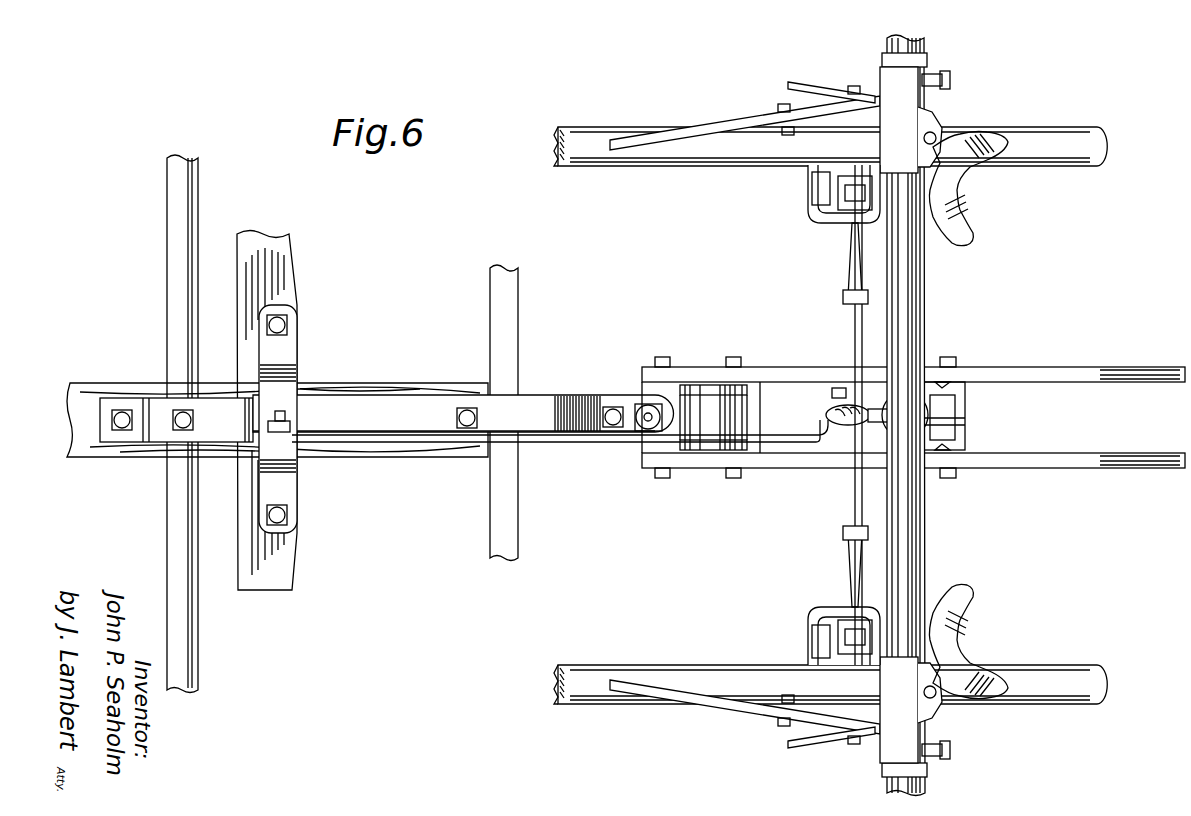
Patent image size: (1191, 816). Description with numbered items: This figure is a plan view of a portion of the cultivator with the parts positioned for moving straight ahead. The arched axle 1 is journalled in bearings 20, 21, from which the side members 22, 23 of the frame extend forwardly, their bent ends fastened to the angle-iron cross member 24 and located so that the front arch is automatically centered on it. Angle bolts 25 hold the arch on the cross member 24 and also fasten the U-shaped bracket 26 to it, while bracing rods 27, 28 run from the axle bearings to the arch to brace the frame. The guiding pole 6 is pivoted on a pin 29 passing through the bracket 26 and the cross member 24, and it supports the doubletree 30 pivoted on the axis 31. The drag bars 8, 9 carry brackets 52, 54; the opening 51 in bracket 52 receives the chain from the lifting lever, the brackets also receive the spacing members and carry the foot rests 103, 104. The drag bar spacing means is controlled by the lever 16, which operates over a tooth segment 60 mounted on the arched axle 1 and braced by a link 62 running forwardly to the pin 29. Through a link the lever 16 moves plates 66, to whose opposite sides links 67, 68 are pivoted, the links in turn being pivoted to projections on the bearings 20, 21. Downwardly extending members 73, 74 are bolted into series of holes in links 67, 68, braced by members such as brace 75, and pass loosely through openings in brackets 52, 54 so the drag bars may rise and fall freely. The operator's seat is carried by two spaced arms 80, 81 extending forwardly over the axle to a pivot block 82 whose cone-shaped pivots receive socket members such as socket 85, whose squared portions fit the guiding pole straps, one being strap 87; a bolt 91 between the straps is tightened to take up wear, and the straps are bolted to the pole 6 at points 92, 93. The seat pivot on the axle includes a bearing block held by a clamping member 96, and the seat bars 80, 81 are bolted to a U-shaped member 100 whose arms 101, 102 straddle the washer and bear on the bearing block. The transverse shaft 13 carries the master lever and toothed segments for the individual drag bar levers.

The arched axle 1 is at (915, 313).
The guiding pole 6 is at (372, 392).
The drag bar 8 is at (1040, 134).
The drag bar 9 is at (1048, 676).
The transverse shaft 13 is at (510, 533).
The lever 16 is at (828, 415).
The bearing 20 is at (915, 120).
The bearing 21 is at (915, 710).
The side member 22 is at (715, 125).
The side member 23 is at (745, 712).
The cross member 24 is at (280, 565).
The angle bolts 25 is at (280, 320).
The U-shaped bracket 26 is at (284, 353).
The bracing rod 27 is at (808, 742).
The bracing rod 28 is at (800, 88).
The pin 29 is at (285, 420).
The doubletree 30 is at (178, 296).
The axis 31 is at (182, 425).
The opening 51 is at (814, 188).
The bracket 52 is at (830, 220).
The bracket 54 is at (828, 612).
The tooth segment 60 is at (960, 425).
The link 62 is at (578, 431).
The plates 66 is at (832, 393).
The link 67 is at (857, 327).
The link 68 is at (858, 495).
The downwardly extending member 73 is at (850, 195).
The downwardly extending member 74 is at (845, 633).
The brace 75 is at (852, 273).
The arm 80 is at (1100, 367).
The arm 81 is at (1100, 453).
The pivot block 82 is at (732, 402).
The socket member 85 is at (646, 421).
The guiding pole strap 87 is at (420, 405).
The bolt 91 is at (614, 410).
The bolting point 92 is at (466, 422).
The bolting point 93 is at (124, 404).
The clamping member 96 is at (845, 533).
The U-shaped member 100 is at (965, 400).
The arm 101 is at (943, 386).
The arm 102 is at (948, 474).
The foot rest 103 is at (957, 221).
The foot rest 104 is at (960, 625).